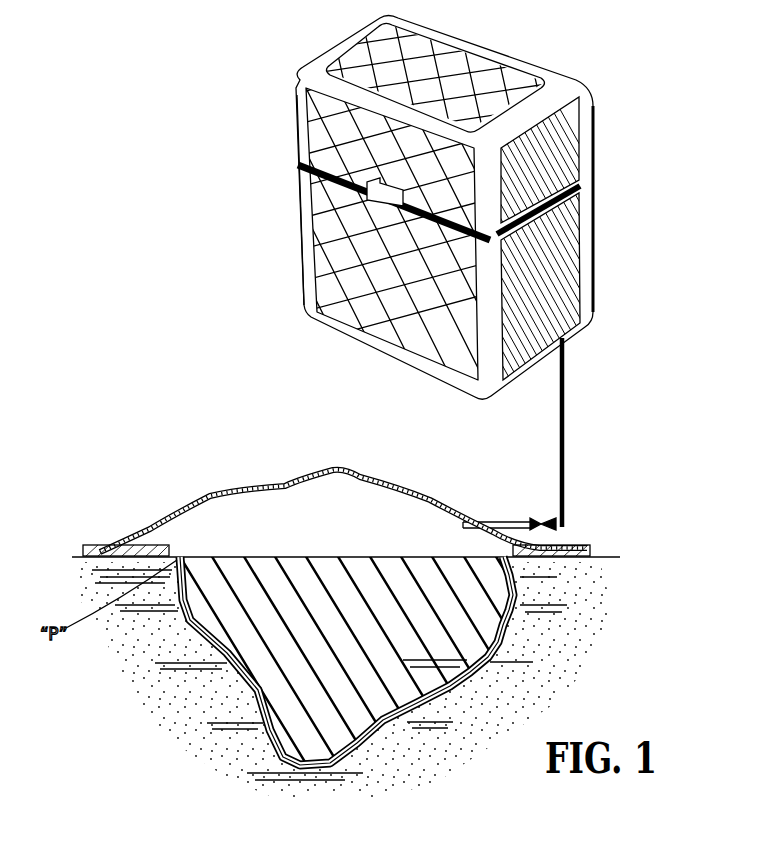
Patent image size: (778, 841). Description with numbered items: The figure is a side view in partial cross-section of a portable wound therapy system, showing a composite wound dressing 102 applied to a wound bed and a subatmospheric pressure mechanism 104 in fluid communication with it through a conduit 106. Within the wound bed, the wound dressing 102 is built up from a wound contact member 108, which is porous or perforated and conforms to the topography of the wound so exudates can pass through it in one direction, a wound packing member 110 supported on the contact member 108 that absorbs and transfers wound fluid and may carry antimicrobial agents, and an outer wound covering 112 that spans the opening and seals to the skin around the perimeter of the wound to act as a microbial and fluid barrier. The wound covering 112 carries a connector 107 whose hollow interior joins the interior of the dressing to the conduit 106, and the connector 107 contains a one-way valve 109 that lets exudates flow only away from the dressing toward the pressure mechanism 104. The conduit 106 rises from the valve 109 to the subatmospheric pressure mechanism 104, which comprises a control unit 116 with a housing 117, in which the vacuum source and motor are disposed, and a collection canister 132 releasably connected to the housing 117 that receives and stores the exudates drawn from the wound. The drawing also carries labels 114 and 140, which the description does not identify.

The composite wound dressing 102 is at (180, 498).
The subatmospheric pressure mechanism 104 is at (271, 148).
The conduit 106 is at (565, 452).
The connector 107 is at (514, 522).
The wound contact member 108 is at (505, 644).
The valve 109 is at (545, 522).
The wound packing member 110 is at (463, 630).
The wound covering 112 is at (425, 492).
The anchor plate 114 is at (588, 557).
The control unit 116 is at (318, 103).
The housing 117 is at (318, 57).
The collection canister 132 is at (299, 258).
The strap with buckle 140 is at (314, 186).